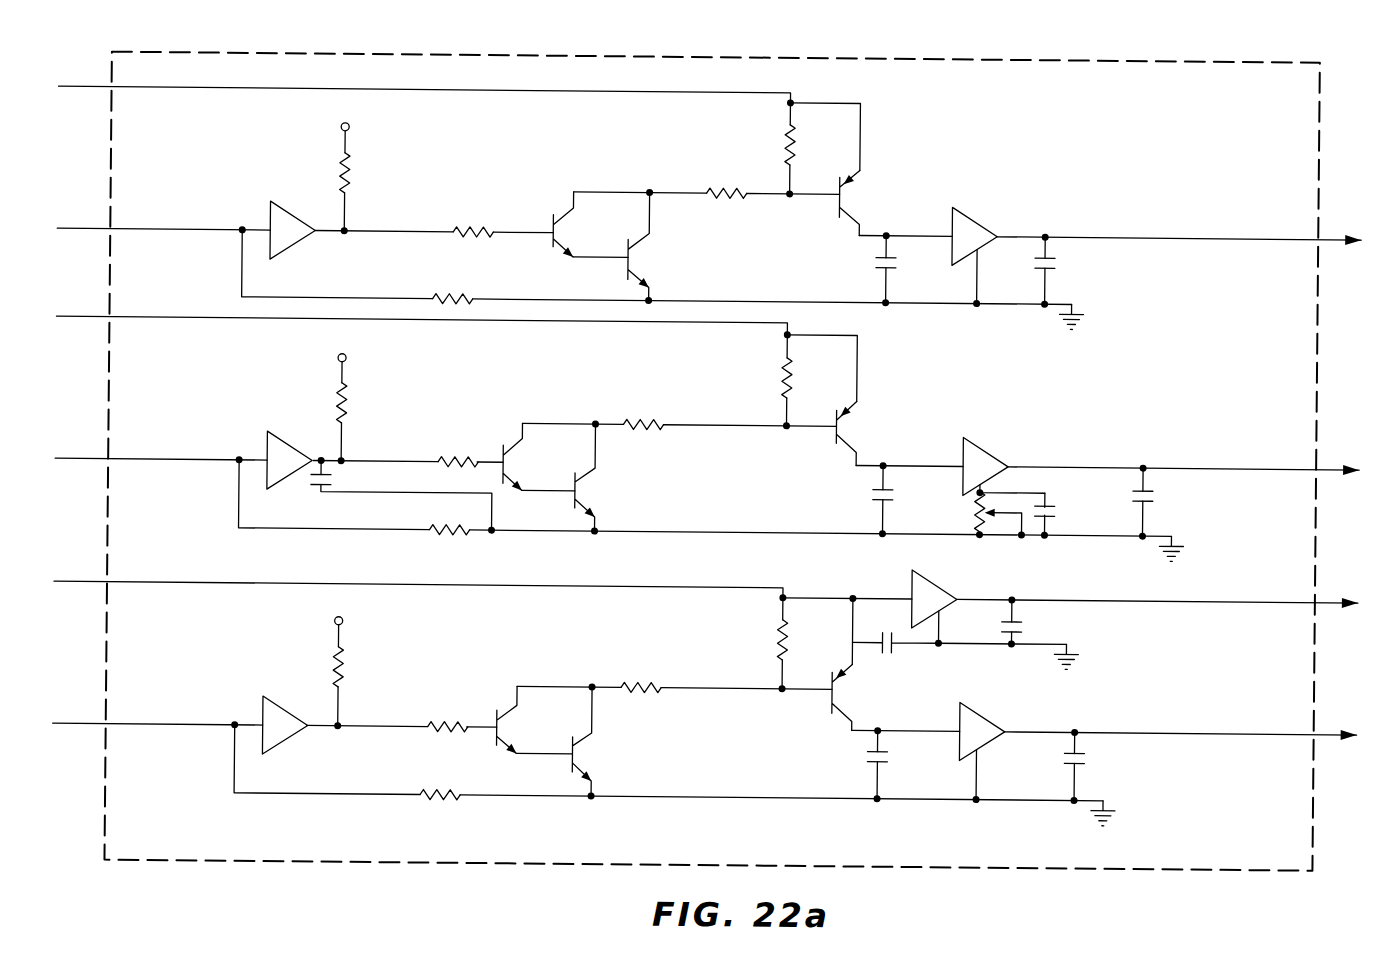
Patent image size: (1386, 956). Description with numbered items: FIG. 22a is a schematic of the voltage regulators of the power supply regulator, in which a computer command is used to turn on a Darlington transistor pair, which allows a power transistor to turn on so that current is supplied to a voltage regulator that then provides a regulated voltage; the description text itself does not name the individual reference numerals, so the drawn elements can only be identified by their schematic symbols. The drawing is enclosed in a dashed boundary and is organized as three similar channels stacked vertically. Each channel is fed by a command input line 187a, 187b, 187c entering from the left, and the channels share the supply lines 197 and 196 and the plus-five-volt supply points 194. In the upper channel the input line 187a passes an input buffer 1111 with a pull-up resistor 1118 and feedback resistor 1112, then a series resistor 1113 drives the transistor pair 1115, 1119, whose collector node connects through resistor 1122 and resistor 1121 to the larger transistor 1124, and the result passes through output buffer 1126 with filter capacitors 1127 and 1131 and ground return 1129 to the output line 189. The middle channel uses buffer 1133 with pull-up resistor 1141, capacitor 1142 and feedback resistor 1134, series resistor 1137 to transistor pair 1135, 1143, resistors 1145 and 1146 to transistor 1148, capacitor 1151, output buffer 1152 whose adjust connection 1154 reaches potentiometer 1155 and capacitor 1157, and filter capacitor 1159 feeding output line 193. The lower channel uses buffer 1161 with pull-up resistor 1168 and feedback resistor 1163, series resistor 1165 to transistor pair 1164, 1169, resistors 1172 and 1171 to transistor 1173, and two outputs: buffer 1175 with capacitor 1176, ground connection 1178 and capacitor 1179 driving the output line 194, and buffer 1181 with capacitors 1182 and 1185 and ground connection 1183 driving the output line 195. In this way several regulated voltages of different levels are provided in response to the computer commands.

The control line 197 is at (73, 92).
The control line 196 is at (73, 322).
The +5V supply / output line 194 is at (338, 130).
The input signal line 187a is at (73, 234).
The input signal line 187b is at (73, 464).
The input signal line 187c is at (73, 729).
The output line 189 is at (1332, 235).
The output line 193 is at (1333, 466).
The output line 195 is at (1332, 731).
The buffer amplifier 1111 is at (290, 212).
The resistor 1112 is at (455, 300).
The resistor 1113 is at (460, 232).
The transistor 1115 is at (551, 222).
The pull-up resistor 1118 is at (346, 178).
The transistor 1119 is at (626, 248).
The resistor 1121 is at (786, 150).
The resistor 1122 is at (706, 192).
The transistor 1124 is at (836, 218).
The buffer amplifier 1126 is at (966, 222).
The capacitor 1127 is at (890, 268).
The ground connection 1129 is at (976, 255).
The capacitor 1131 is at (1050, 264).
The buffer amplifier 1133 is at (290, 448).
The resistor 1134 is at (455, 535).
The transistor 1135 is at (503, 452).
The resistor 1137 is at (456, 463).
The pull-up resistor 1141 is at (345, 404).
The capacitor 1142 is at (330, 489).
The transistor 1143 is at (574, 480).
The resistor 1145 is at (636, 424).
The resistor 1146 is at (784, 386).
The transistor 1148 is at (836, 420).
The capacitor 1151 is at (876, 494).
The buffer amplifier 1152 is at (972, 450).
The connection line 1154 is at (984, 490).
The potentiometer 1155 is at (976, 514).
The capacitor 1157 is at (1050, 508).
The capacitor 1159 is at (1150, 494).
The buffer amplifier 1161 is at (288, 714).
The resistor 1163 is at (434, 795).
The transistor 1164 is at (504, 750).
The resistor 1165 is at (460, 727).
The pull-up resistor 1168 is at (344, 668).
The transistor 1169 is at (574, 742).
The resistor 1171 is at (782, 646).
The resistor 1172 is at (626, 687).
The transistor 1173 is at (834, 712).
The buffer amplifier 1175 is at (930, 592).
The capacitor 1176 is at (890, 652).
The ground connection 1178 is at (941, 628).
The capacitor 1179 is at (1018, 622).
The buffer amplifier 1181 is at (980, 730).
The capacitor 1182 is at (884, 764).
The ground connection 1183 is at (981, 790).
The capacitor 1185 is at (1084, 756).